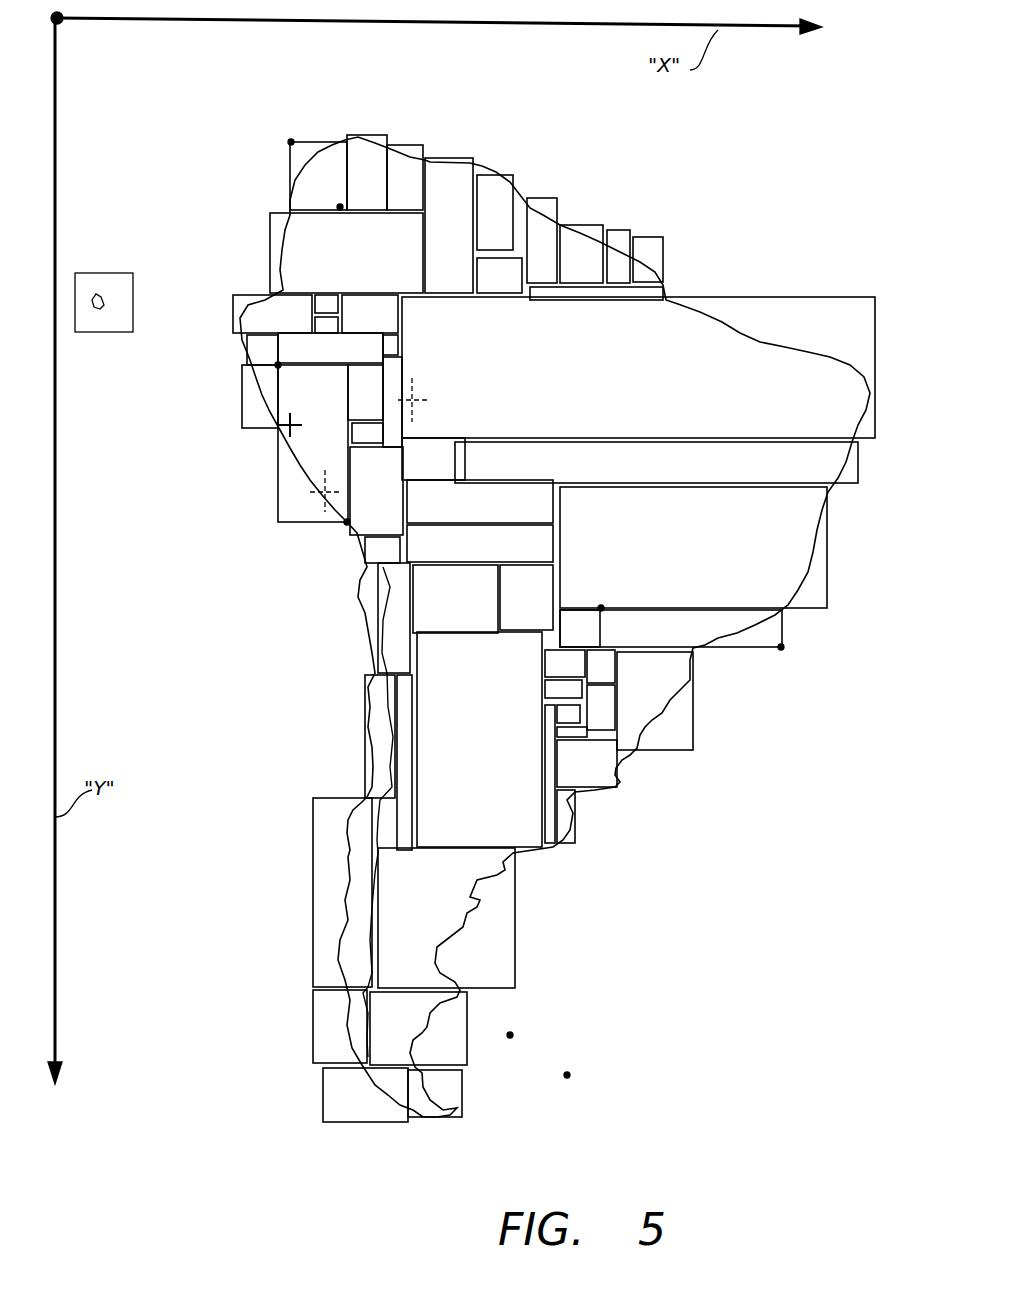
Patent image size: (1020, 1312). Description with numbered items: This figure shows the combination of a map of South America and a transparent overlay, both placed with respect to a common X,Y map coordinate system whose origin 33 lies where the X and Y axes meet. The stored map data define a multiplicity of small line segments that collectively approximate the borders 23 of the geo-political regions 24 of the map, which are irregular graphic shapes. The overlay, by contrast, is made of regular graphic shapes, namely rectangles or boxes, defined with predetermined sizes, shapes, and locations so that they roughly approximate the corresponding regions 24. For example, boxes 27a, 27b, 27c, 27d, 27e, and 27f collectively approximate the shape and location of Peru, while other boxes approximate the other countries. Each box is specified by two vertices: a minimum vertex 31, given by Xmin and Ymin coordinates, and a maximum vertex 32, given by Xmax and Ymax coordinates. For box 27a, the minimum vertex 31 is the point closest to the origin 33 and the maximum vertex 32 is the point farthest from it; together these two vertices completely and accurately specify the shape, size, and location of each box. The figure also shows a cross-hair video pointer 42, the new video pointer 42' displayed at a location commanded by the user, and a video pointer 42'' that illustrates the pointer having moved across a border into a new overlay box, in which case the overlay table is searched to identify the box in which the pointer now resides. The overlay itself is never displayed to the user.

The origin 33 is at (62, 22).
The minimum vertex 31 is at (291, 140).
The maximum vertex 32 is at (340, 208).
The borders 23 is at (795, 345).
The geo-political regions 24 is at (760, 545).
The box 27a is at (278, 493).
The box 27b is at (250, 408).
The box 27c is at (242, 345).
The box 27d is at (373, 510).
The box 27e is at (415, 432).
The box 27f is at (372, 540).
The video pointer 42 is at (250, 444).
The new video pointer 42' is at (270, 517).
The video pointer 42'' is at (440, 391).